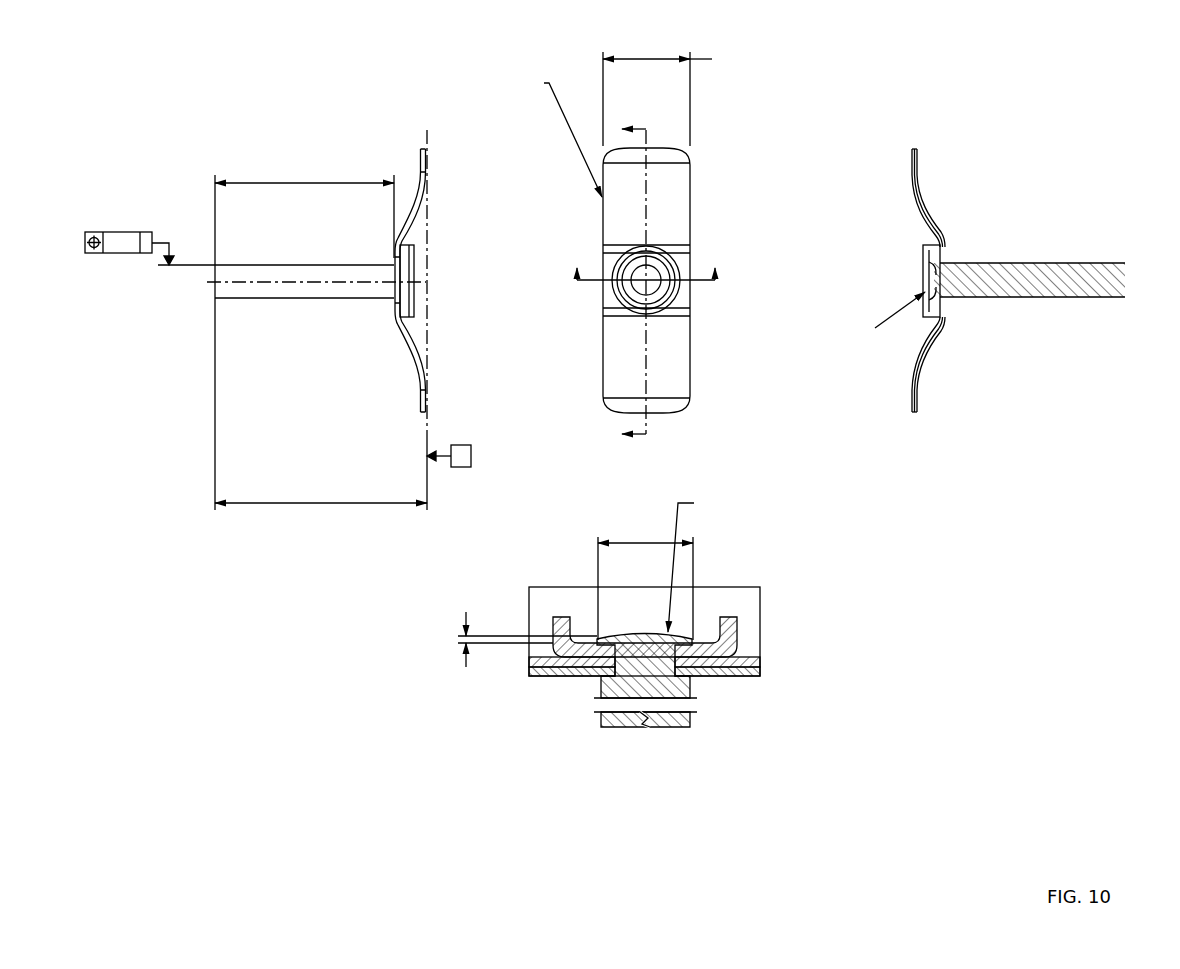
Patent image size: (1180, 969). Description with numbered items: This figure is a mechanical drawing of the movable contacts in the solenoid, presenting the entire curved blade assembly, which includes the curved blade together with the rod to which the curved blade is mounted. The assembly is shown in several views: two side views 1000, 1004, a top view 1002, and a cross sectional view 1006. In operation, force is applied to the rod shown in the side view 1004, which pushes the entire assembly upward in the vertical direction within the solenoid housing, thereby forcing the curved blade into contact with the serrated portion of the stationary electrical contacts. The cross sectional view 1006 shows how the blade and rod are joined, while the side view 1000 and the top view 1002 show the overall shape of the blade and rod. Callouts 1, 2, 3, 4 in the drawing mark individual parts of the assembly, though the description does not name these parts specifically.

The side view of curved blade assembly 1000 is at (278, 337).
The top view of curved blade assembly 1002 is at (603, 256).
The side view of curved blade assembly 1004 is at (938, 282).
The cross sectional view of curved blade assembly 1006 is at (598, 641).
The rivet head 1 is at (920, 255).
The spring clip outer leaf 2 is at (913, 187).
The spring clip inner leaf 3 is at (929, 210).
The shaft 4 is at (1023, 263).